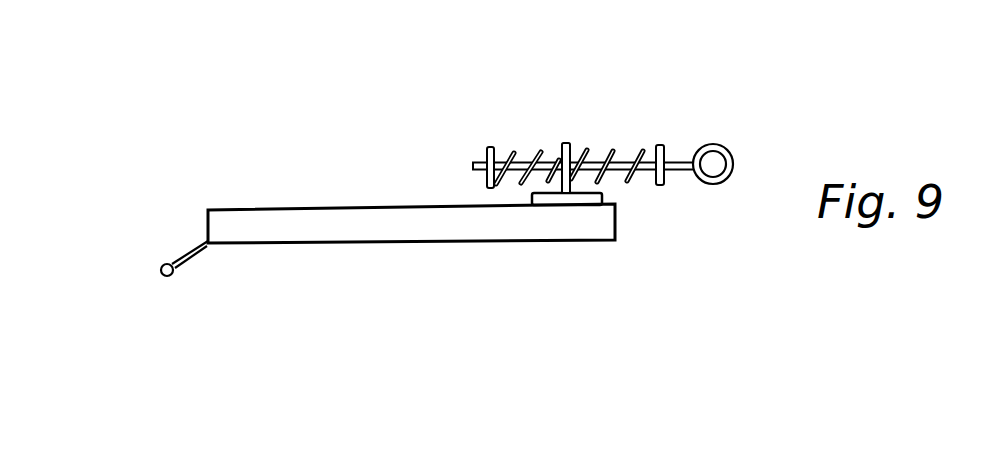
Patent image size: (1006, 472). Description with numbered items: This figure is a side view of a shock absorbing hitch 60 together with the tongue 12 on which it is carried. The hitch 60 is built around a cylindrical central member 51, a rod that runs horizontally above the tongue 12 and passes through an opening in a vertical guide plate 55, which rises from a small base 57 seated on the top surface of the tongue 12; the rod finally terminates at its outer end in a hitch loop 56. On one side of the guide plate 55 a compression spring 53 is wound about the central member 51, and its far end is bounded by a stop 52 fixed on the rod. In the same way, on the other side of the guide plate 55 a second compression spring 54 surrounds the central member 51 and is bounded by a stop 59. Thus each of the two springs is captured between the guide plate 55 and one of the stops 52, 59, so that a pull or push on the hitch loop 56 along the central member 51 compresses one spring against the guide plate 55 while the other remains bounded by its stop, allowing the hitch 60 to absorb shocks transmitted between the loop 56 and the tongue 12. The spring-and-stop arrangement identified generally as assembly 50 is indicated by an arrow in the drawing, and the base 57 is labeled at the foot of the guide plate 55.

The tongue 12 is at (395, 230).
The spring assembly 50 is at (602, 96).
The cylindrical central member 51 is at (486, 160).
The stop 52 is at (491, 147).
The compression spring 53 is at (541, 150).
The second compression spring 54 is at (612, 152).
The vertical guide plate 55 is at (565, 142).
The hitch loop 56 is at (728, 148).
The pedestal 57 is at (593, 195).
The stop 59 is at (663, 145).
The shock absorbing hitch 60 is at (714, 53).